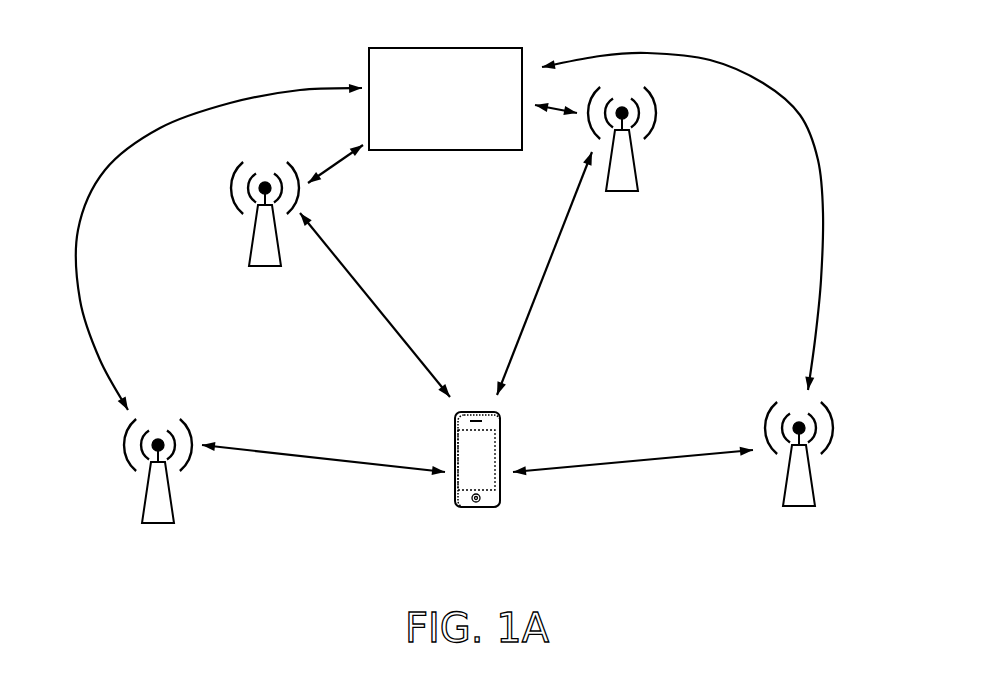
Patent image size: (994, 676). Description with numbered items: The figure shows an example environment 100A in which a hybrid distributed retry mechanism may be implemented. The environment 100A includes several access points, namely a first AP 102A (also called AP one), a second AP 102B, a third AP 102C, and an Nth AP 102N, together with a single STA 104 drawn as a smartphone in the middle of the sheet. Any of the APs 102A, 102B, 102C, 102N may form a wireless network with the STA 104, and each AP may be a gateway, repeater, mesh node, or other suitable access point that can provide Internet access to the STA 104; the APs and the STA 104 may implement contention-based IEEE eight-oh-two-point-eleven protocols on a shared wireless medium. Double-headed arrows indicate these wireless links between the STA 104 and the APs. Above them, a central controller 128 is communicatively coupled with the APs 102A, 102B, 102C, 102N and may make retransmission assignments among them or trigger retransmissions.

The environment 100A is at (205, 42).
The first AP 102A is at (145, 505).
The second AP 102B is at (252, 247).
The third AP 102C is at (635, 173).
The Nth AP 102N is at (812, 486).
The STA 104 is at (455, 453).
The central controller 128 is at (464, 139).